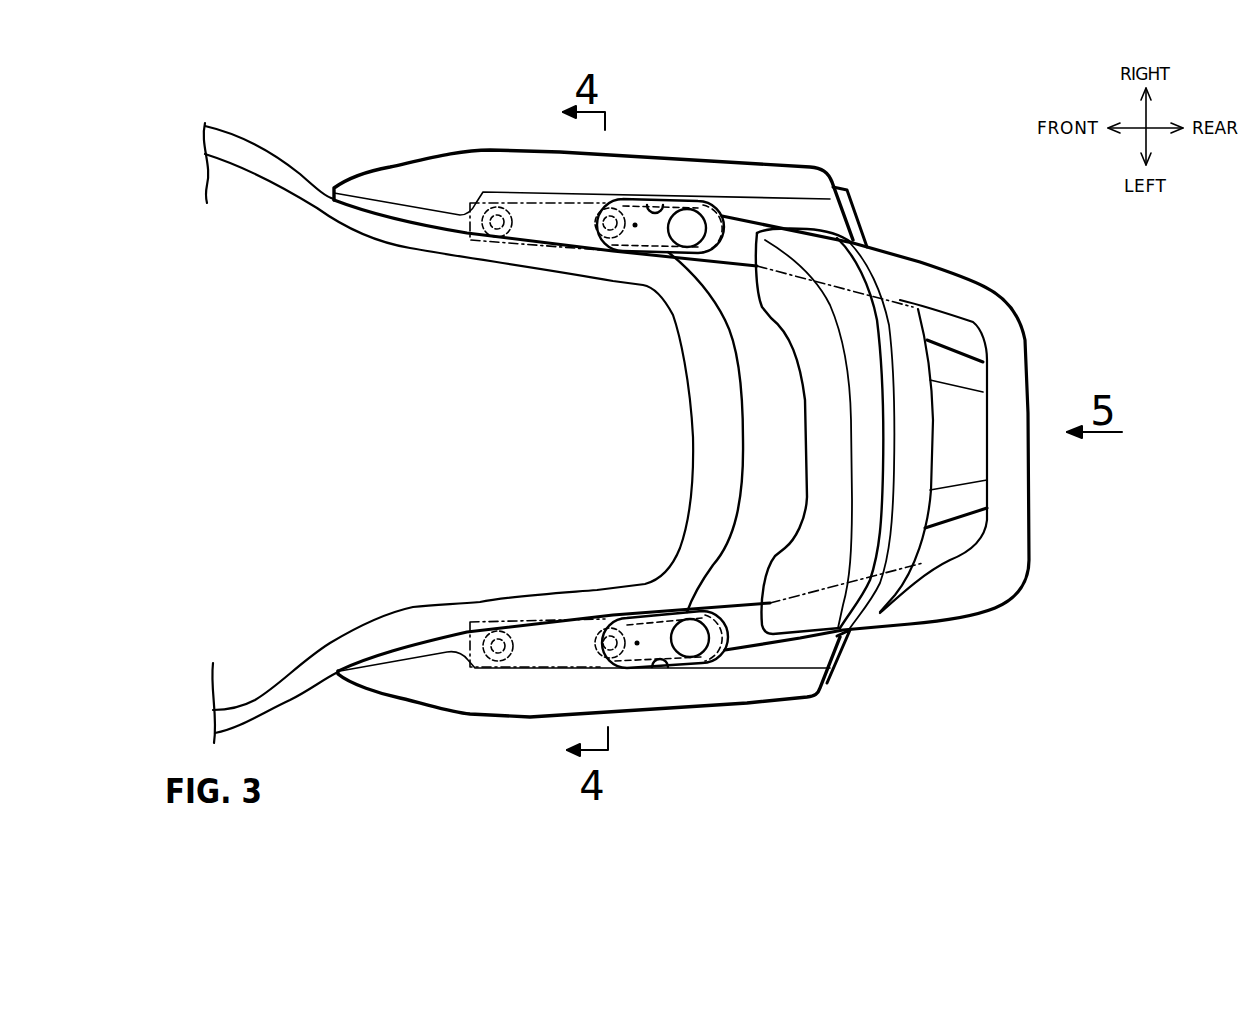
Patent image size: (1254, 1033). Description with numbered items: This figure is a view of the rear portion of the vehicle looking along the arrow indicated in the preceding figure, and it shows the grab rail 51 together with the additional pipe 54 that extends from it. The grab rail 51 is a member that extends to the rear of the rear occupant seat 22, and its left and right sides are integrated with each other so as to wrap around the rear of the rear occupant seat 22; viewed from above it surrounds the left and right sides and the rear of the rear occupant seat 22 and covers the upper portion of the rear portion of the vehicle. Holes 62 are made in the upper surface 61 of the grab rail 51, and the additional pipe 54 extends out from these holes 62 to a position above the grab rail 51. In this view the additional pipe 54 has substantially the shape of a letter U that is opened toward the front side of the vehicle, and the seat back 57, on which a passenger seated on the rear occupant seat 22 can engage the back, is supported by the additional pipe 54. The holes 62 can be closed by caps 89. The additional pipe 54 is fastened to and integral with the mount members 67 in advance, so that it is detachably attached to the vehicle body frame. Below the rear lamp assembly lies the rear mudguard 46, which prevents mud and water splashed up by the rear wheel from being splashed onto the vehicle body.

The rear occupant seat 22 is at (501, 432).
The rear mudguard 46 is at (957, 503).
The grab rail 51 is at (757, 180).
The additional pipe 54 is at (978, 300).
The seat back 57 is at (873, 435).
The upper surface 61 is at (800, 213).
The holes 62 is at (670, 207).
The mount members 67 is at (497, 207).
The caps 89 is at (635, 222).